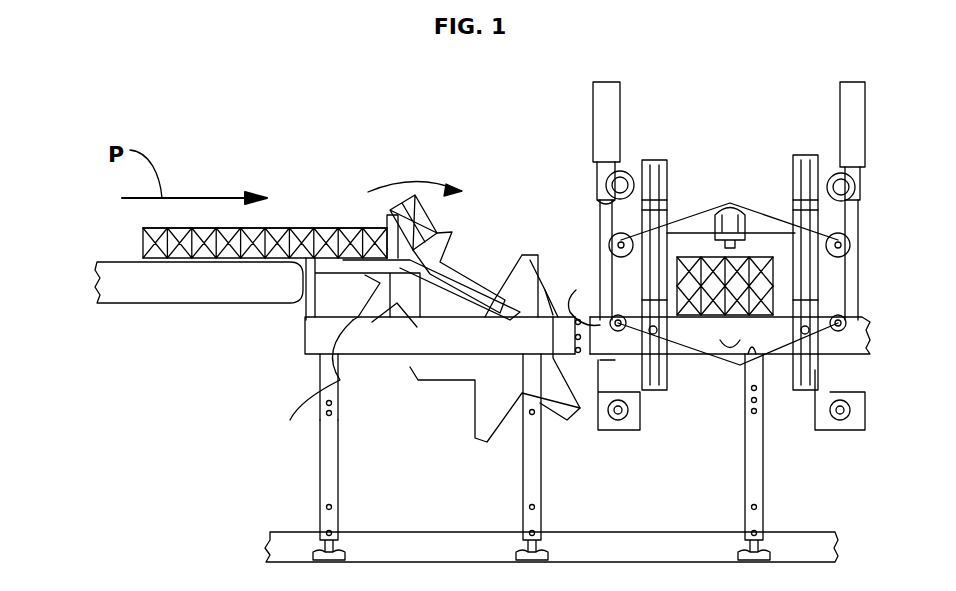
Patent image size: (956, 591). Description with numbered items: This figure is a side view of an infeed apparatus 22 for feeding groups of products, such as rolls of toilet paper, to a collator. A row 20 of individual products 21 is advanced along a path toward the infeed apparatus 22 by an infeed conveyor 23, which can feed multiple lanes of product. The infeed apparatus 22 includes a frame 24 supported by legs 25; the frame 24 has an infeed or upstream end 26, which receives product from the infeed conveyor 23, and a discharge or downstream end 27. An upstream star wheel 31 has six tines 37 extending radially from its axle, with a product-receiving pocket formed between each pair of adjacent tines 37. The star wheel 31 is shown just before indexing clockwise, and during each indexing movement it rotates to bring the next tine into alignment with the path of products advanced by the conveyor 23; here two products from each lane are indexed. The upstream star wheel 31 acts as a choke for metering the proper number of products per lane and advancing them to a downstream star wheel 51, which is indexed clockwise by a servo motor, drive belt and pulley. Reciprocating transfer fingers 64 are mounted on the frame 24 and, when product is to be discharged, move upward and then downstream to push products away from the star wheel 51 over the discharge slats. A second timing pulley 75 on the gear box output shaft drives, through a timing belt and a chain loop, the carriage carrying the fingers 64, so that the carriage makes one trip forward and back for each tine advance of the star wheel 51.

The row 20 is at (143, 243).
The individual products 21 is at (182, 228).
The infeed apparatus 22 is at (420, 148).
The infeed conveyor 23 is at (160, 312).
The frame 24 is at (298, 344).
The legs 25 is at (322, 458).
The infeed end 26 is at (302, 327).
The discharge end 27 is at (553, 315).
The upstream star wheel 31 is at (380, 208).
The tines 37 is at (322, 400).
The downstream star wheel 51 is at (520, 245).
The transfer fingers 64 is at (566, 306).
The second timing pulley 75 is at (710, 200).